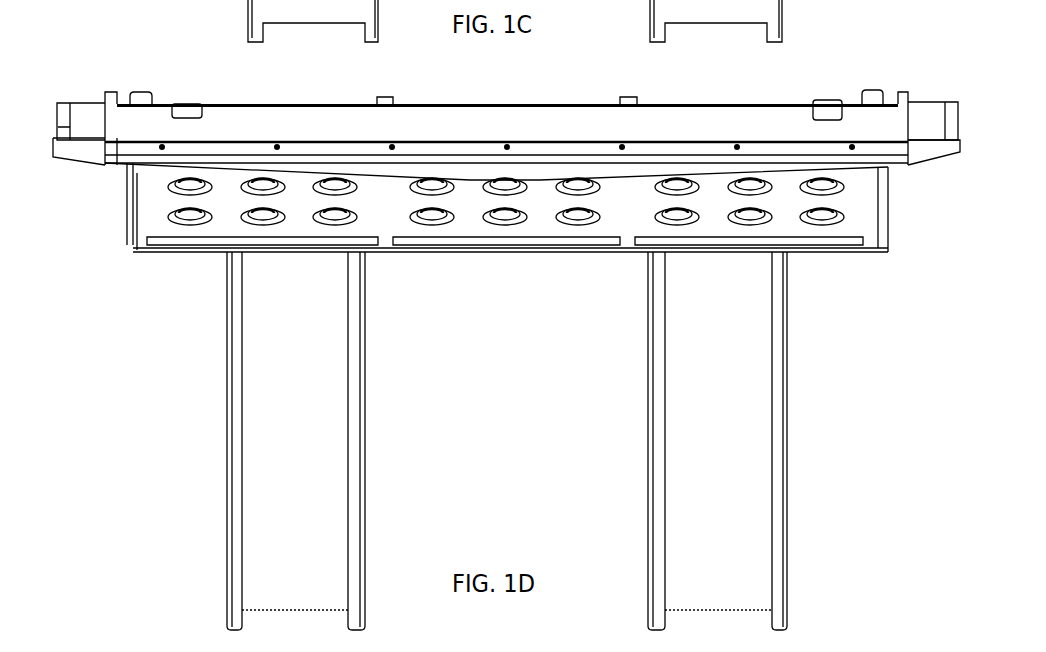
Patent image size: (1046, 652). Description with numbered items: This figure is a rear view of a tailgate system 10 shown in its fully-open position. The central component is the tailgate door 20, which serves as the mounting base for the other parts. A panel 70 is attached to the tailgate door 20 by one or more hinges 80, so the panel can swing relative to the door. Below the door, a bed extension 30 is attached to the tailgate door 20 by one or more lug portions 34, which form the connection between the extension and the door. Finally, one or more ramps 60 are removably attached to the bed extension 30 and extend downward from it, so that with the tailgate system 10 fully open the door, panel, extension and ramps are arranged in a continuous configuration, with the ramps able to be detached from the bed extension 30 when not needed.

The tailgate system 10 is at (850, 384).
The tailgate door 20 is at (485, 122).
The bed extension 30 is at (150, 203).
The lug portion 34 is at (140, 97).
The ramp 60 is at (267, 453).
The panel 70 is at (578, 106).
The hinge 80 is at (187, 112).